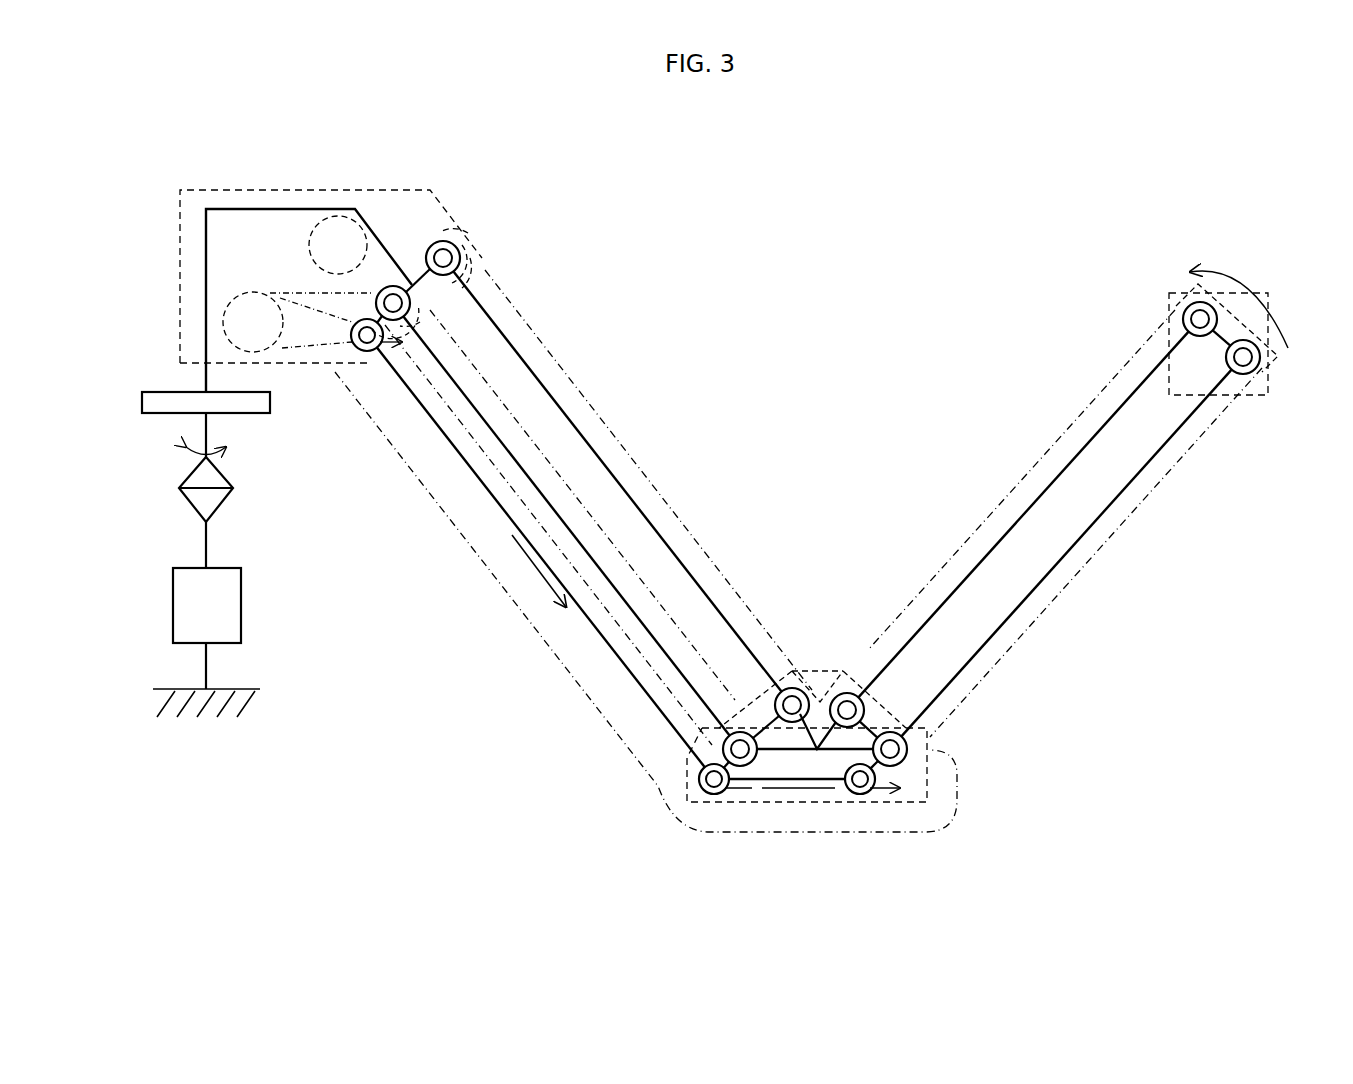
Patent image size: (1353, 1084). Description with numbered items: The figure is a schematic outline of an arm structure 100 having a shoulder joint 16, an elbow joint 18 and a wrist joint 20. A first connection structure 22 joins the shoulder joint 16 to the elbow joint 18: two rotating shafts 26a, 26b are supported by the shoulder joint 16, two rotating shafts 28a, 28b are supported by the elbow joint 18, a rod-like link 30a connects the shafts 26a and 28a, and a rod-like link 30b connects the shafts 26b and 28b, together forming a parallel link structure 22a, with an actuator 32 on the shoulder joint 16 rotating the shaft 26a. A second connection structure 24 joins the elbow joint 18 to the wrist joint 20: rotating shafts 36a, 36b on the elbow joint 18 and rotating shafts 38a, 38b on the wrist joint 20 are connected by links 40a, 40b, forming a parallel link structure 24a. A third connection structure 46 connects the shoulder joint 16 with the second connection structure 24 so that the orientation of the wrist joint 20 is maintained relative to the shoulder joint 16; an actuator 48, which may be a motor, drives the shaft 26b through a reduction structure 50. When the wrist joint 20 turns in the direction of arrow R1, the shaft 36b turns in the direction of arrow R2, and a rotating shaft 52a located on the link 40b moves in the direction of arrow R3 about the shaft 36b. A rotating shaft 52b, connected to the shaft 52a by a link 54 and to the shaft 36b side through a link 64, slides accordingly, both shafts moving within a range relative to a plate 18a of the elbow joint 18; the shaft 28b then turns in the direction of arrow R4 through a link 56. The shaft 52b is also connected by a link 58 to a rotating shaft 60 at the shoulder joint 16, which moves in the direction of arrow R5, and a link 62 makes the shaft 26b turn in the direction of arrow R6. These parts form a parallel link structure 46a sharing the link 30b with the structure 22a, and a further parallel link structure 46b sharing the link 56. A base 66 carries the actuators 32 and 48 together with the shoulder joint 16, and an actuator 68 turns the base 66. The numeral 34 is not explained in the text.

The arm structure 100 is at (561, 952).
The shoulder joint 16 is at (390, 188).
The elbow joint 18 is at (818, 668).
The plate 18a is at (808, 780).
The wrist joint 20 is at (1270, 390).
The first connection structure 22 is at (596, 458).
The parallel link structure 22a is at (551, 355).
The second connection structure 24 is at (1077, 525).
The parallel link structure 24a is at (990, 508).
The rotating shaft 26a is at (464, 248).
The rotating shaft 26b is at (415, 305).
The rotating shaft 28a is at (790, 688).
The rotating shaft 28b is at (737, 700).
The link 30a is at (672, 548).
The link 30b is at (615, 605).
The actuator 32 is at (321, 216).
The roller holder 34 is at (447, 235).
The rotating shaft 36a is at (848, 690).
The rotating shaft 36b is at (910, 745).
The rotating shaft 38a is at (1182, 322).
The rotating shaft 38b is at (1256, 376).
The link 40a is at (1083, 440).
The link 40b is at (1140, 474).
The third connection structure 46 is at (646, 633).
The parallel link structure 46a is at (583, 690).
The parallel link structure 46b is at (738, 832).
The actuator 48 is at (222, 320).
The reduction structure 50 is at (330, 362).
The rotating shaft 52a is at (862, 797).
The rotating shaft 52b is at (714, 795).
The link 54 is at (845, 795).
The link 56 is at (786, 792).
The link 58 is at (651, 700).
The rotating shaft 60 is at (367, 352).
The link 62 is at (365, 300).
The link 64 is at (900, 770).
The base 66 is at (142, 402).
The actuator 68 is at (173, 608).
The arrow R1 is at (1250, 287).
The arrow R2 is at (880, 792).
The arrow R3 is at (810, 800).
The arrow R4 is at (705, 785).
The arrow R5 is at (515, 575).
The arrow R6 is at (355, 328).